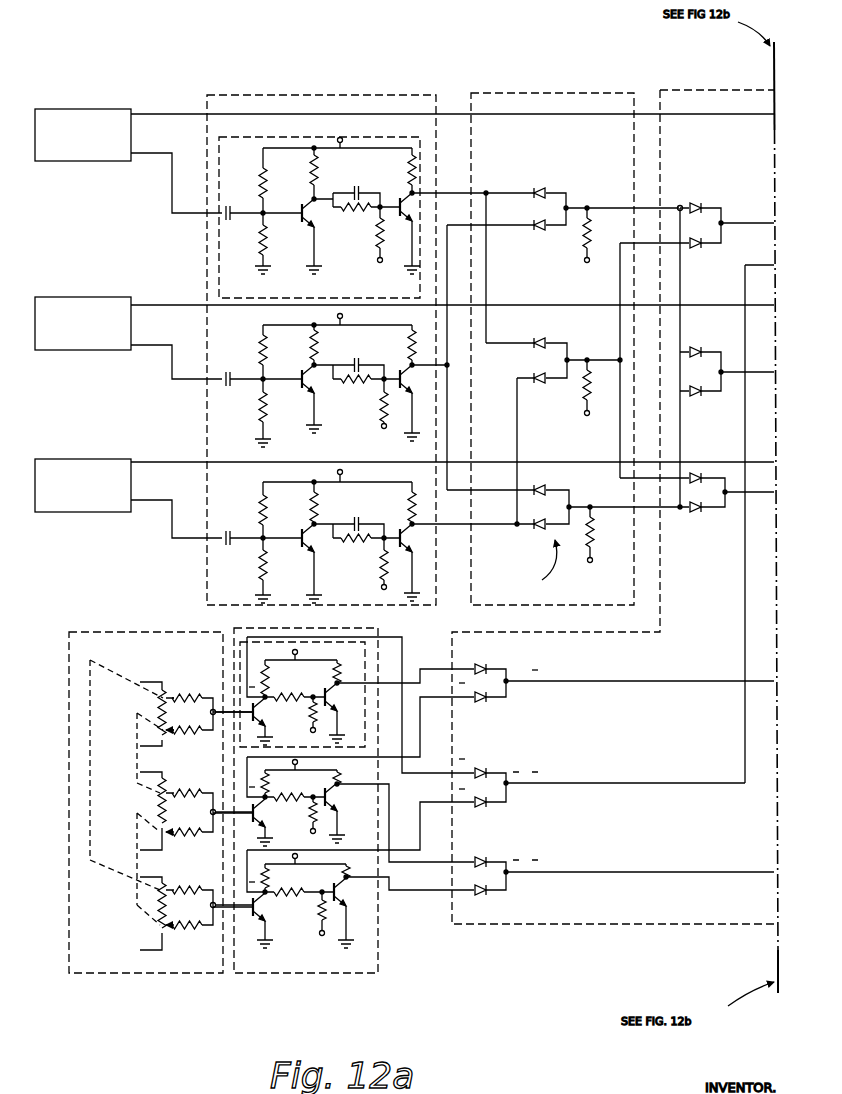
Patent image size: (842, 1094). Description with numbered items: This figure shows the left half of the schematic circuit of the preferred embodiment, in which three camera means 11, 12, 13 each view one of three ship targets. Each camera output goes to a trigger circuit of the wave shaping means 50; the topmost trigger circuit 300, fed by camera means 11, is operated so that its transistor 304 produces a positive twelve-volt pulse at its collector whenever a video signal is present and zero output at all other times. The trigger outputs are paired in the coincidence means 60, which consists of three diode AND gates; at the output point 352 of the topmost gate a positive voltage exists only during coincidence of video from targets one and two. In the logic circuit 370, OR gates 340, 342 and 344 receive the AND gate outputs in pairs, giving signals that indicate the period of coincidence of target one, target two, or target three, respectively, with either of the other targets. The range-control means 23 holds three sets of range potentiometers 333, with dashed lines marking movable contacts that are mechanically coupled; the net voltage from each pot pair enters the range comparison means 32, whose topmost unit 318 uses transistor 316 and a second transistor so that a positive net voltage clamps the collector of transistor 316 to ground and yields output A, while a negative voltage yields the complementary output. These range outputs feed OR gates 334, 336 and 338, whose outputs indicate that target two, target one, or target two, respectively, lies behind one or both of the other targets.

The camera means 11 is at (74, 109).
The camera means 12 is at (74, 297).
The camera #3 means 13 is at (74, 459).
The wave shaping means 50 is at (398, 95).
The trigger circuit 300 is at (236, 139).
The transistor 304 is at (406, 222).
The coincidence means 60 is at (604, 93).
The output point of diode AND circuit 352 is at (565, 212).
The logic circuit 370 is at (707, 90).
The OR gate 340 is at (724, 226).
The OR gate 342 is at (723, 376).
The OR gate 344 is at (690, 520).
The OR gate 334 is at (516, 688).
The OR gate 336 is at (512, 790).
The OR gate 338 is at (515, 876).
The range comparison means 32 is at (303, 975).
The range comparison circuit 318 is at (333, 682).
The transistor Q19 316 is at (257, 717).
The range-control means 23 is at (124, 975).
The range potentiometers 333 is at (172, 927).